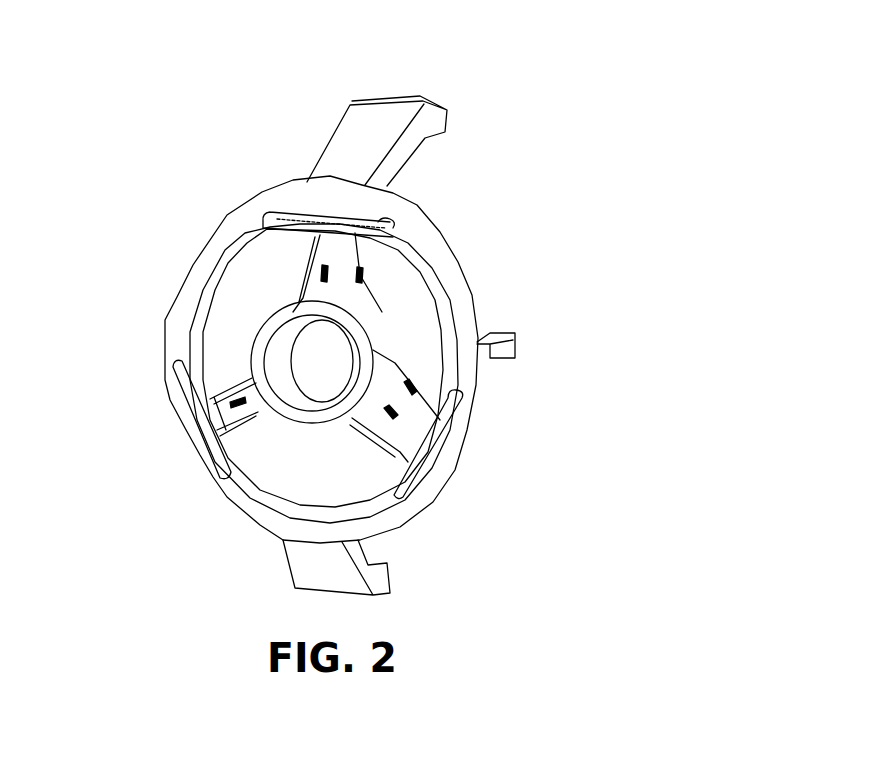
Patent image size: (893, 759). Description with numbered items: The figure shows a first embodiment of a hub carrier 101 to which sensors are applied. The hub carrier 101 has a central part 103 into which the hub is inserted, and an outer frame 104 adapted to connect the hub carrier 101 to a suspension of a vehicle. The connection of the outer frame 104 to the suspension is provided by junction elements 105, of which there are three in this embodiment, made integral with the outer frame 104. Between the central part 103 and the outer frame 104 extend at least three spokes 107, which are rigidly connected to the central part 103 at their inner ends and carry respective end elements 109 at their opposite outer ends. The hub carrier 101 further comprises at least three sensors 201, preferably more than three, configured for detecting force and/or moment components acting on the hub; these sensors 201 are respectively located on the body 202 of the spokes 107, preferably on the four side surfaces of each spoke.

The hub carrier 101 is at (482, 149).
The central part 103 is at (287, 387).
The outer frame 104 is at (463, 293).
The junction elements 105 is at (333, 144).
The spokes 107 is at (307, 281).
The end elements 109 is at (345, 229).
The sensors 201 is at (385, 411).
The body 202 is at (418, 410).